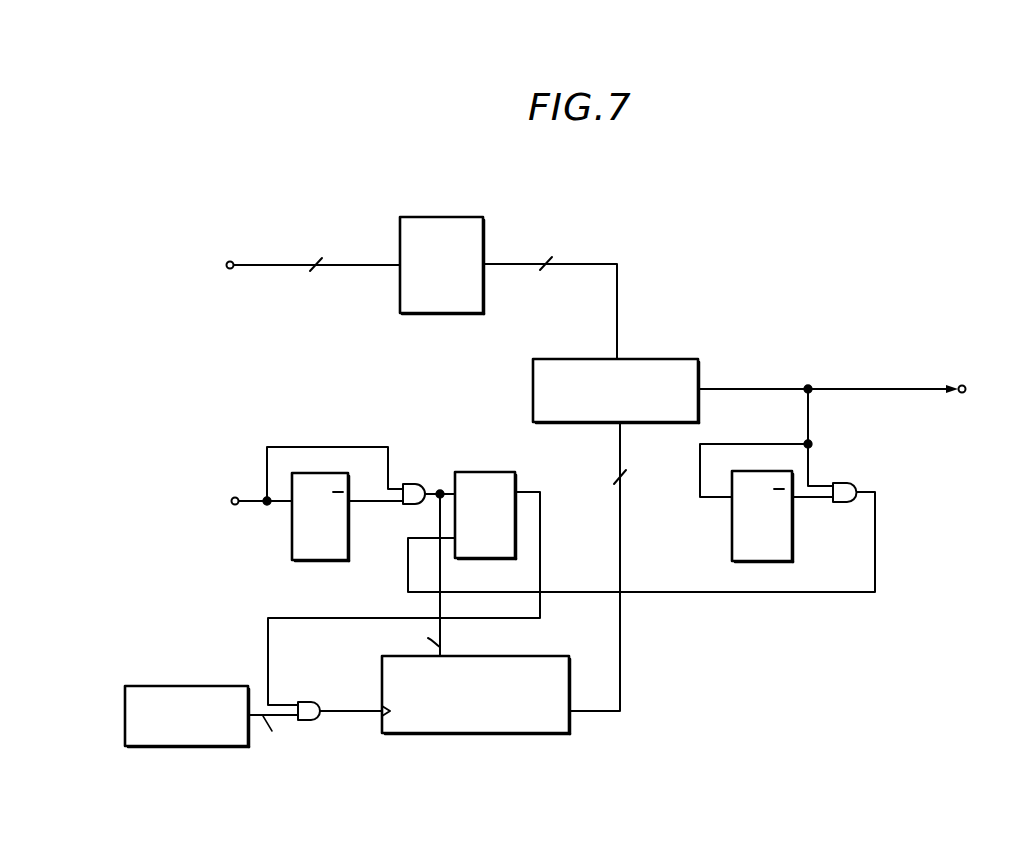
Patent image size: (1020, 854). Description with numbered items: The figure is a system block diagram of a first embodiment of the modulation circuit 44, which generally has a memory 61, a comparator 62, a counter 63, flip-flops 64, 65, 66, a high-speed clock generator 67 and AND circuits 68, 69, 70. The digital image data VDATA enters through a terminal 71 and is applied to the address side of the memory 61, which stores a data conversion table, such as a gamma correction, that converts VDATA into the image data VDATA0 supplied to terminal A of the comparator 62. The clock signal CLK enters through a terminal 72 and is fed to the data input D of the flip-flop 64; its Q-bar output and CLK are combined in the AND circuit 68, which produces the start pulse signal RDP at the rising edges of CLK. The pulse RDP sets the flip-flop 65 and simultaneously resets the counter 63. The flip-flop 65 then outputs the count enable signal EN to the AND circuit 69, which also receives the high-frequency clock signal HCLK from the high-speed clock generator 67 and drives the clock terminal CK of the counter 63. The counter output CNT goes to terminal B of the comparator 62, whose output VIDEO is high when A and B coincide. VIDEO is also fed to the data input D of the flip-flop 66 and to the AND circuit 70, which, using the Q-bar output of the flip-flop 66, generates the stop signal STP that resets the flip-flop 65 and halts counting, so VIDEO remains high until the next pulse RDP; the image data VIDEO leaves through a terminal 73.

The modulation circuit 44 is at (784, 203).
The memory 61 is at (441, 313).
The comparator 62 is at (567, 359).
The counter 63 is at (560, 656).
The flip-flop 64 is at (320, 560).
The flip-flop 65 is at (497, 558).
The flip-flop 66 is at (731, 546).
The high-speed clock generator 67 is at (250, 742).
The AND circuit 68 is at (413, 485).
The AND circuit 69 is at (310, 702).
The AND circuit 70 is at (850, 483).
The terminal 71 is at (232, 262).
The terminal 72 is at (238, 507).
The terminal 73 is at (961, 397).